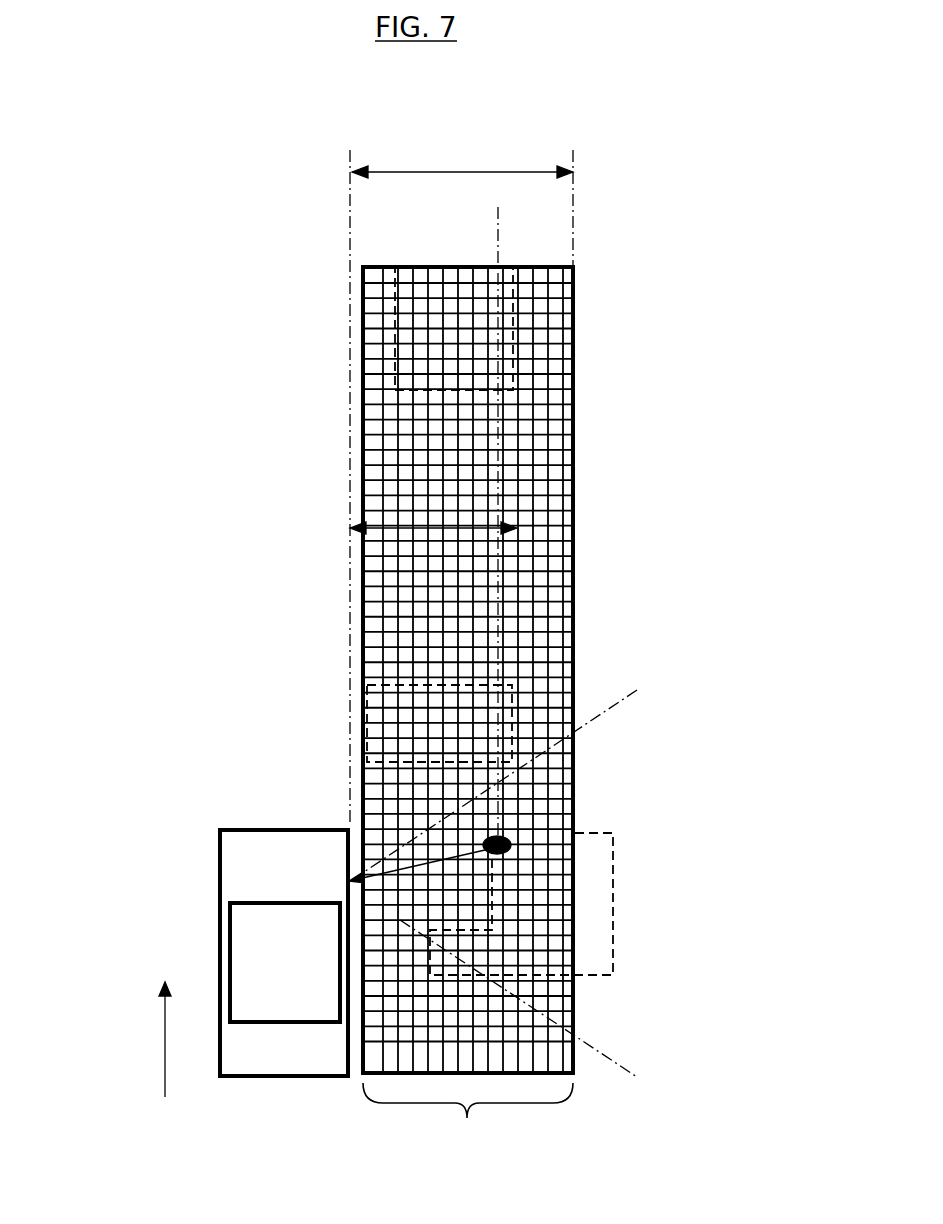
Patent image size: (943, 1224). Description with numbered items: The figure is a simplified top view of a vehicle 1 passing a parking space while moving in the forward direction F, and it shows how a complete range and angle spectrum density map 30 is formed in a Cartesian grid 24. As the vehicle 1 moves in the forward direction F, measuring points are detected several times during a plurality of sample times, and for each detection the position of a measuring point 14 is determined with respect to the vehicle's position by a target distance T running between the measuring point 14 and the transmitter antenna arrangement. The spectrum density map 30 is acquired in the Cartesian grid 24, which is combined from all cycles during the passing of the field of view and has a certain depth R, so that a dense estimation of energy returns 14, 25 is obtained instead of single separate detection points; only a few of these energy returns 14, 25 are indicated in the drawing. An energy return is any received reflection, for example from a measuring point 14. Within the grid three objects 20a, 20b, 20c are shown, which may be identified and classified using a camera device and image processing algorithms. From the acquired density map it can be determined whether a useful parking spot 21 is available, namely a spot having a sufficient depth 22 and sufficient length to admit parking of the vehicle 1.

The vehicle 1 is at (278, 917).
The measuring point 14 is at (500, 833).
The object 20a is at (350, 320).
The object 20b is at (390, 677).
The object 20c is at (615, 948).
The useful parking spot 21 is at (390, 463).
The depth 22 is at (433, 514).
The Cartesian grid 24 is at (468, 1126).
The energy return 25 is at (478, 476).
The spectrum density map 30 is at (586, 555).
The depth R is at (462, 157).
The target distance T is at (405, 862).
The forward direction F is at (145, 1039).